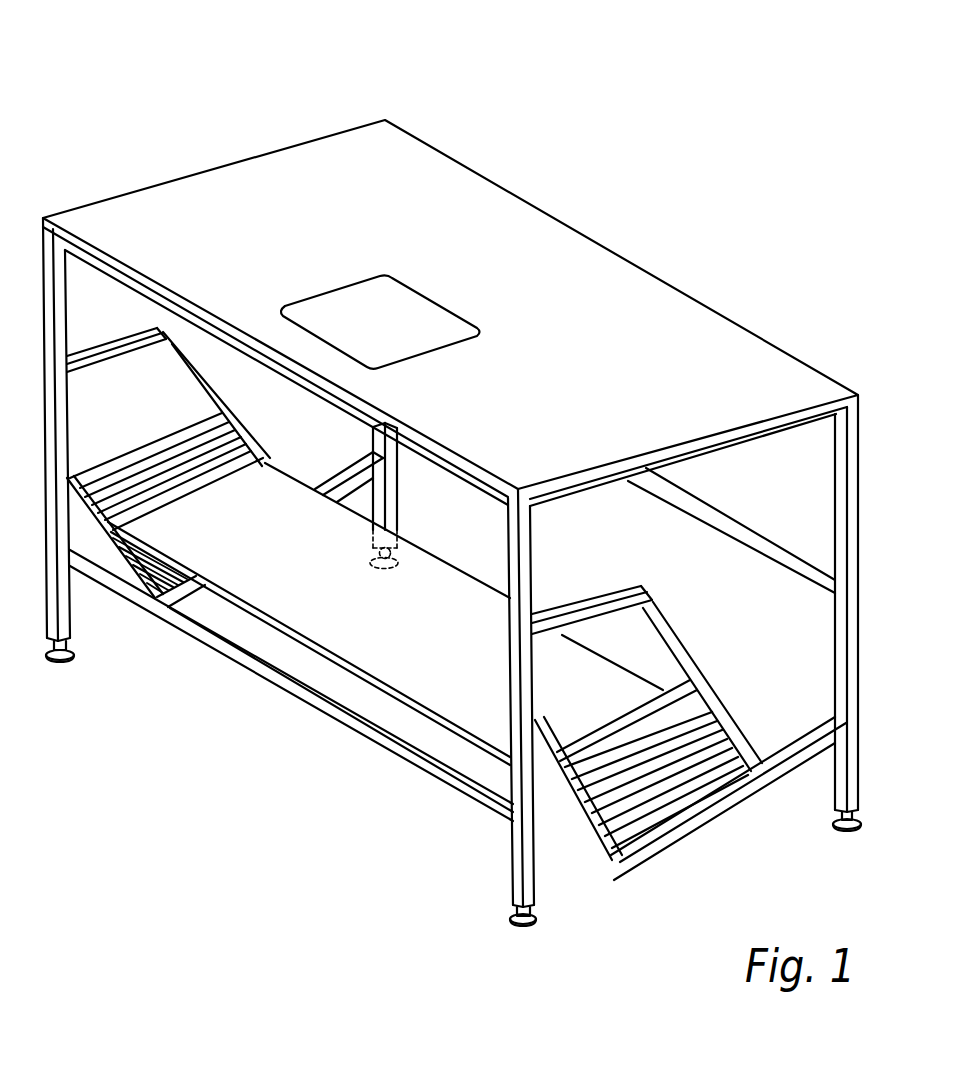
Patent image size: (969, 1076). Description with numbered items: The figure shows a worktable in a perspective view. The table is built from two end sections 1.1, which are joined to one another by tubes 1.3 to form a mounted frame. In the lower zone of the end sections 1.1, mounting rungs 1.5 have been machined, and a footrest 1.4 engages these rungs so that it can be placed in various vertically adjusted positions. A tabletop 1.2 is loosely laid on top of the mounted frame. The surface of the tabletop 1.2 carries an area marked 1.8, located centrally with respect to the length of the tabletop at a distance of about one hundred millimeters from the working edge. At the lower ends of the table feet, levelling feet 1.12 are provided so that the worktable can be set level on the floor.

The end section 1.1 is at (452, 487).
The tabletop 1.2 is at (450, 256).
The tubes 1.3 is at (405, 755).
The footrest 1.4 is at (383, 657).
The mounting rungs 1.5 is at (658, 772).
The marked area 1.8 is at (445, 328).
The levelling feet 1.12 is at (512, 912).